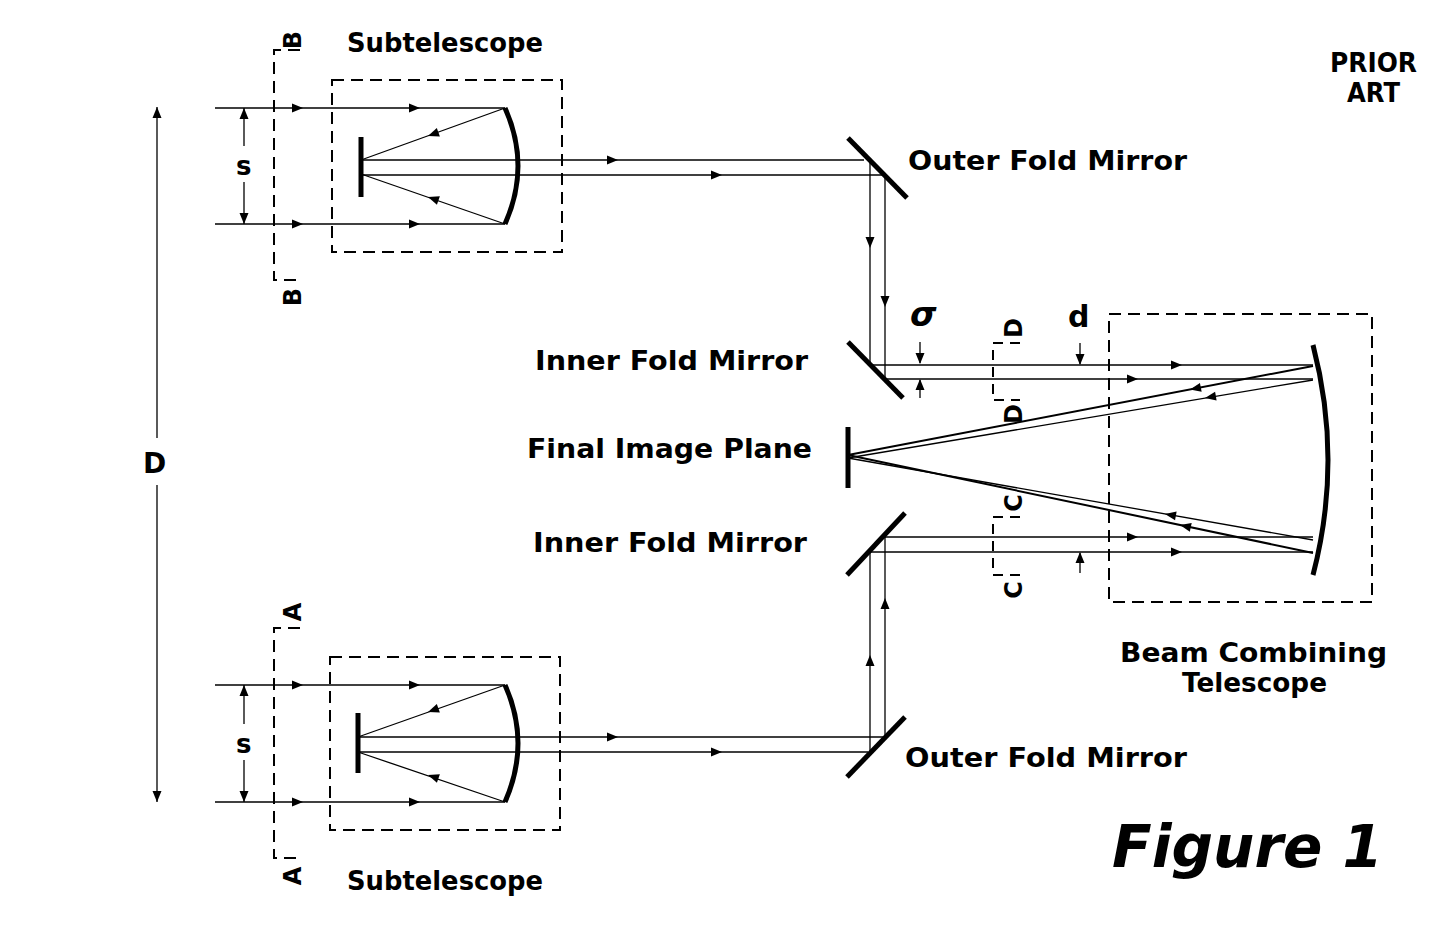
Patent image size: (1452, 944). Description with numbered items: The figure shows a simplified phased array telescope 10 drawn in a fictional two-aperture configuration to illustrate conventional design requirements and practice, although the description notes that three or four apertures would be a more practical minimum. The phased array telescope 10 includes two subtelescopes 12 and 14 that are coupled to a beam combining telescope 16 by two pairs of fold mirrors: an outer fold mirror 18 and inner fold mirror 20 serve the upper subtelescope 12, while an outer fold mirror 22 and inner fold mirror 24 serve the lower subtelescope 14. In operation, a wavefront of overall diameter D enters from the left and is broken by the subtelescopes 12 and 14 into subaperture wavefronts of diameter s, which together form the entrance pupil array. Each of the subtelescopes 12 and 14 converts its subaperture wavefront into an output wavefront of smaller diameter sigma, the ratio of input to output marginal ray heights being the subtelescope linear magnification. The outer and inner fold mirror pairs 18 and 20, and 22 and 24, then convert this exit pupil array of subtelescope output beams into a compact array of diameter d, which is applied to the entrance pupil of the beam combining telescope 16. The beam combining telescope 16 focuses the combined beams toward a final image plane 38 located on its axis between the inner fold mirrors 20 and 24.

The phased array telescope 10 is at (703, 793).
The subtelescope 12 is at (562, 100).
The subtelescope 14 is at (560, 678).
The beam combining telescope 16 is at (1372, 320).
The outer fold mirror 18 is at (866, 142).
The inner fold mirror 20 is at (858, 362).
The outer fold mirror 22 is at (897, 721).
The inner fold mirror 24 is at (848, 568).
The final image plane 38 is at (846, 432).